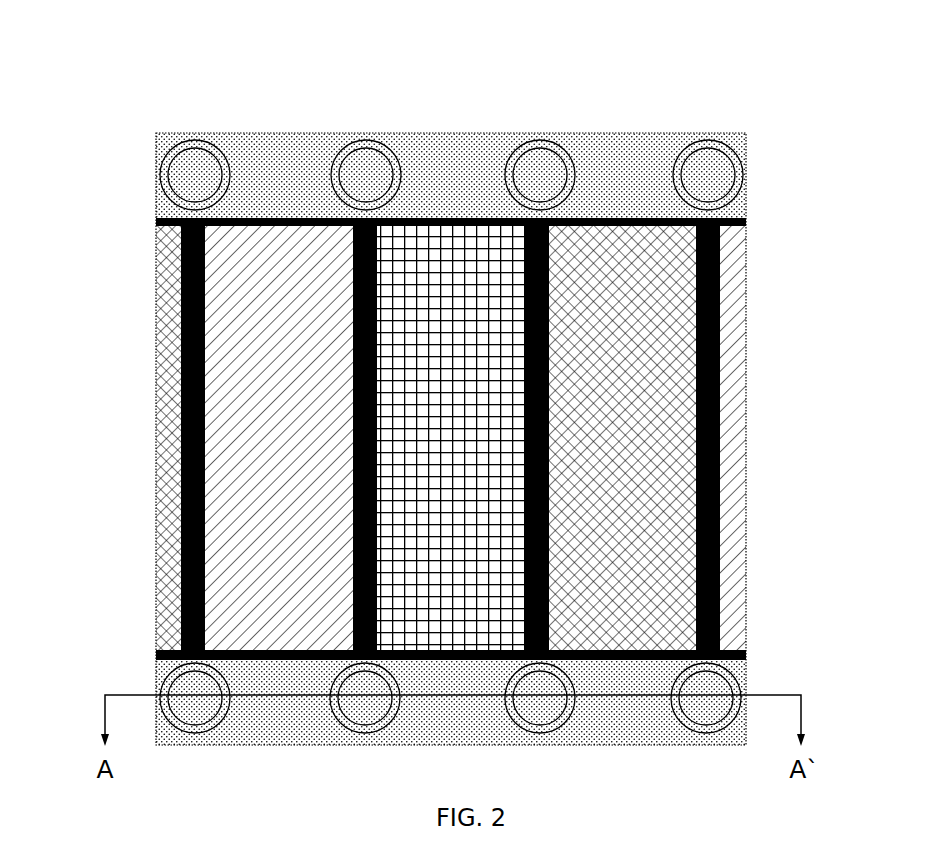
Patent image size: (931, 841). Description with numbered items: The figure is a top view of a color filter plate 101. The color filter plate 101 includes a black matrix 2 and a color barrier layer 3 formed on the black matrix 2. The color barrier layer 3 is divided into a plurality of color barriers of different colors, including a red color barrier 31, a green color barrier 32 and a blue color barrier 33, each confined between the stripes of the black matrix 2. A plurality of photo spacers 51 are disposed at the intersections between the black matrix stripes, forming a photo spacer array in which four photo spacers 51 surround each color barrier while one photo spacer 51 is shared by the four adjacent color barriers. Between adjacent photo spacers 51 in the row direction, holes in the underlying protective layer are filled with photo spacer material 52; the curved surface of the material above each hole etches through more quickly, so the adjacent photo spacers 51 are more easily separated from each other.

The color filter plate 101 is at (68, 108).
The black matrix 2 is at (738, 648).
The color barrier layer 3 is at (737, 387).
The red color barrier 31 is at (722, 167).
The green color barrier 32 is at (442, 210).
The blue color barrier 33 is at (145, 275).
The photo spacer 51 is at (738, 161).
The photo spacer material 52 is at (625, 175).